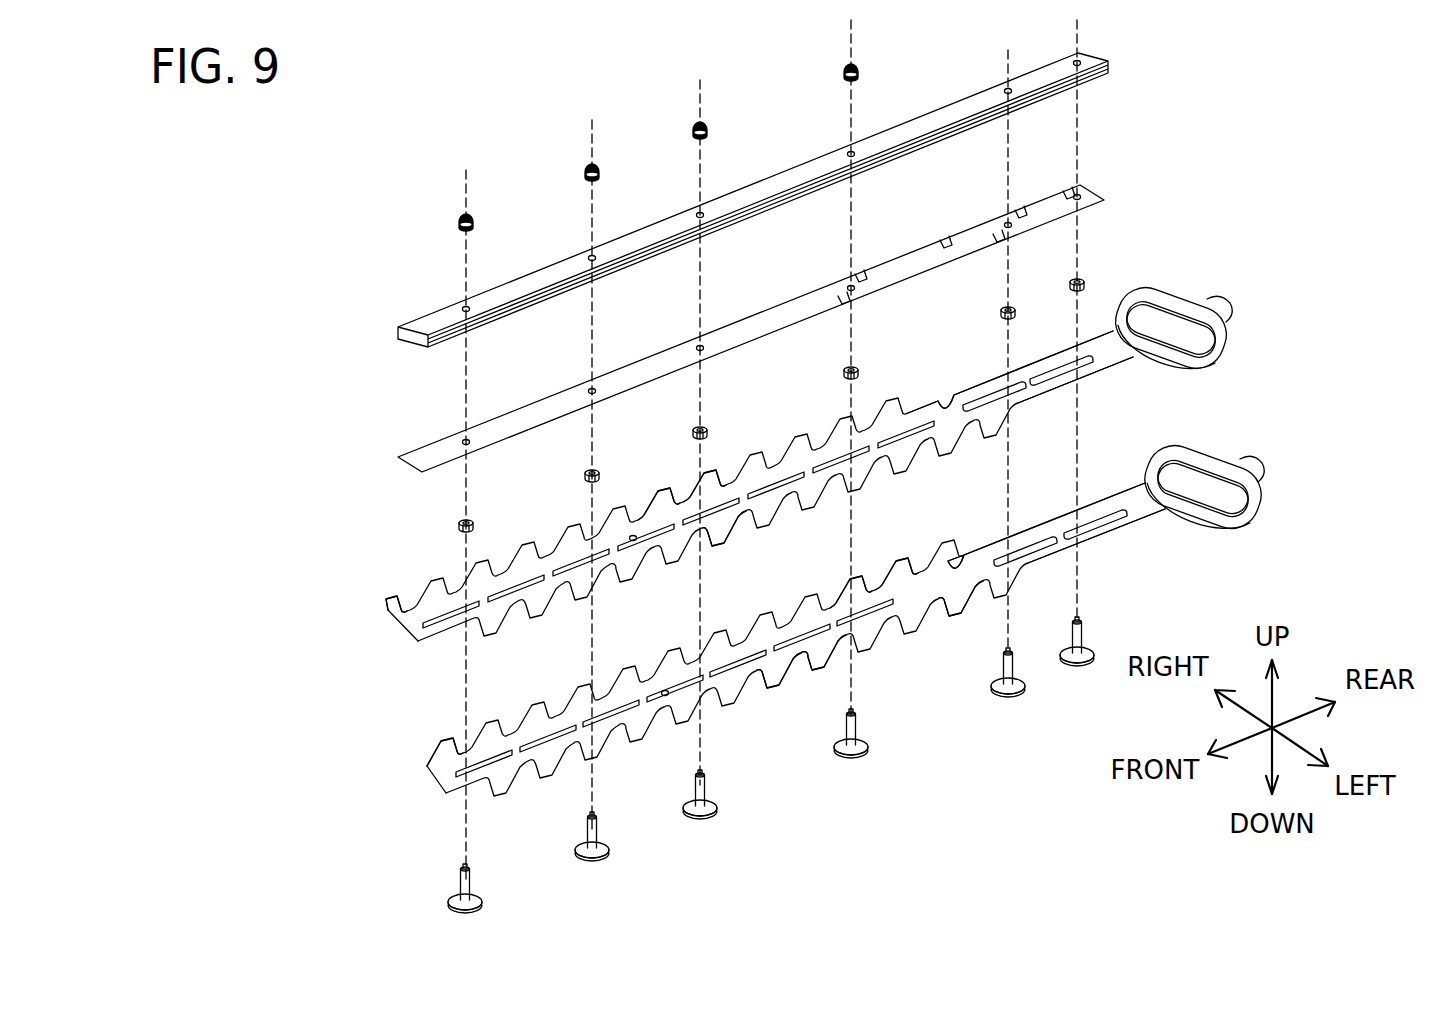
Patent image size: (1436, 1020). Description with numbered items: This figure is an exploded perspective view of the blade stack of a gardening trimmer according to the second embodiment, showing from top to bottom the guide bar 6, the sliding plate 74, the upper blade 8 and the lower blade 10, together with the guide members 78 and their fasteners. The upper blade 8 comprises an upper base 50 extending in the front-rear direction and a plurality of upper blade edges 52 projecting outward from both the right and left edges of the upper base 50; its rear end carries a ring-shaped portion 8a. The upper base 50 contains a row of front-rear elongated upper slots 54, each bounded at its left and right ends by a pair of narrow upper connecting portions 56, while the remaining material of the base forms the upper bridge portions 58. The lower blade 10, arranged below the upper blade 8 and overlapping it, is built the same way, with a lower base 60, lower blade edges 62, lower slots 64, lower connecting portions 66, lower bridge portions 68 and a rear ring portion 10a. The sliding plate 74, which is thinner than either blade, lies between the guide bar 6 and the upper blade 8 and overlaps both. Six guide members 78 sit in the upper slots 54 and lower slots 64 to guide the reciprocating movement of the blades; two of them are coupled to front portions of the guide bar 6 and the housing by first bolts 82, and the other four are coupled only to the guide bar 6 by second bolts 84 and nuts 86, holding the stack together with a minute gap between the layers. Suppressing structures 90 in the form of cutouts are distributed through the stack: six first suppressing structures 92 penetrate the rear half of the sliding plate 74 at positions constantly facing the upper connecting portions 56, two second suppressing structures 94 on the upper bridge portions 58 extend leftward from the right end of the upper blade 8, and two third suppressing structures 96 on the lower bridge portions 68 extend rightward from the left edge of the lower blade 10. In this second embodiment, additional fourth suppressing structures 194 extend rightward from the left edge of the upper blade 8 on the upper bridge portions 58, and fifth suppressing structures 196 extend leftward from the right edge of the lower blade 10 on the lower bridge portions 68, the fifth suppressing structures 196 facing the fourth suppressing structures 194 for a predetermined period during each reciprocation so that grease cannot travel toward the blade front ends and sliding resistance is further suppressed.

The guide bar 6 is at (410, 325).
The upper blade 8 is at (771, 446).
The ring portion of upper blade 8a is at (1185, 310).
The lower blade 10 is at (799, 600).
The ring portion of lower blade 10a is at (1222, 468).
The upper base 50 is at (942, 389).
The upper blade edges 52 is at (390, 597).
The upper slots 54 is at (663, 520).
The upper connecting portions 56 is at (720, 478).
The upper bridge portions 58 is at (722, 548).
The lower base 60 is at (985, 566).
The lower blade edges 62 is at (450, 744).
The lower slots 64 is at (860, 596).
The lower connecting portions 66 is at (885, 600).
The lower bridge portions 68 is at (772, 690).
The sliding plate 74 is at (744, 299).
The guide members 78 is at (468, 520).
The first bolts 82 is at (1020, 692).
The second bolts 84 is at (482, 904).
The nuts 86 is at (458, 222).
The suppressing structures 90 is at (749, 276).
The first suppressing structures 92 is at (840, 296).
The second suppressing structures 94 is at (944, 410).
The third suppressing structures 96 is at (814, 668).
The fourth suppressing structures 194 is at (766, 500).
The fifth suppressing structures 196 is at (800, 630).